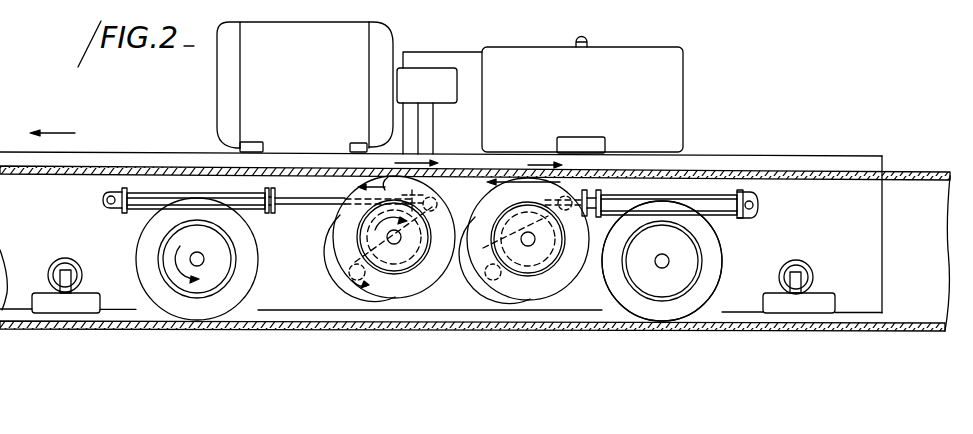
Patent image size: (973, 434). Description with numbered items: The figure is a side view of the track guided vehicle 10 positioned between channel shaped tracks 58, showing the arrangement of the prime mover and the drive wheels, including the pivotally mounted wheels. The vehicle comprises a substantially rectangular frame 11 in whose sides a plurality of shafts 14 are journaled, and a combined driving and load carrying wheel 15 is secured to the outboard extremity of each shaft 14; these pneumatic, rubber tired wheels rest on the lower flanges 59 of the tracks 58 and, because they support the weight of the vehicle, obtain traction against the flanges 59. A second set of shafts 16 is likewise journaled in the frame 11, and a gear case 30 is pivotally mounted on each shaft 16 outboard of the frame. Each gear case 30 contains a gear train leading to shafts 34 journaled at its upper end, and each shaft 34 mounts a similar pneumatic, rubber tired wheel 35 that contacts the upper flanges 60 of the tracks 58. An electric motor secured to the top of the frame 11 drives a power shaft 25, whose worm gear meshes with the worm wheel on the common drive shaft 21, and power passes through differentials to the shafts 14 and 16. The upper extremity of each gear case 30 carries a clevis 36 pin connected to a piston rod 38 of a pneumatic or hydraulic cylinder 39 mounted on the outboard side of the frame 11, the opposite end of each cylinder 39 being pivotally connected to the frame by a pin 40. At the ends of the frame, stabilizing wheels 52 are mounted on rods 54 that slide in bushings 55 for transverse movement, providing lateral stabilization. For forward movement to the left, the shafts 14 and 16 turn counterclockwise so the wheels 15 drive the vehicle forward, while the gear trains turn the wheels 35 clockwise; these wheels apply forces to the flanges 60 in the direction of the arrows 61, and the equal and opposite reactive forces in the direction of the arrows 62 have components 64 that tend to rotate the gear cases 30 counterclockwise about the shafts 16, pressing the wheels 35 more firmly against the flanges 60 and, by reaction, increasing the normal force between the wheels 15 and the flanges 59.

The track guided vehicle 10 is at (206, 130).
The frame 11 is at (156, 158).
The shafts 14 is at (208, 243).
The combined driving and load carrying wheel 15 is at (712, 250).
The shafts 16 is at (334, 247).
The common drive shaft 21 is at (300, 30).
The power shaft 25 is at (428, 110).
The gear case 30 is at (334, 283).
The shafts 34 is at (461, 238).
The pneumatic rubber tired wheel 35 is at (484, 206).
The clevis 36 is at (487, 213).
The piston rods 38 is at (320, 204).
The pneumatic or hydraulic cylinders 39 is at (136, 198).
The pins 40 is at (103, 199).
The stabilizing wheels 52 is at (60, 303).
The rods 54 is at (58, 267).
The bushings 55 is at (72, 256).
The tracks 58 is at (905, 190).
The lower flanges 59 is at (506, 328).
The upper flanges 60 is at (830, 176).
The arrows 61 is at (422, 160).
The arrows 62 is at (386, 194).
The components 64 is at (394, 184).